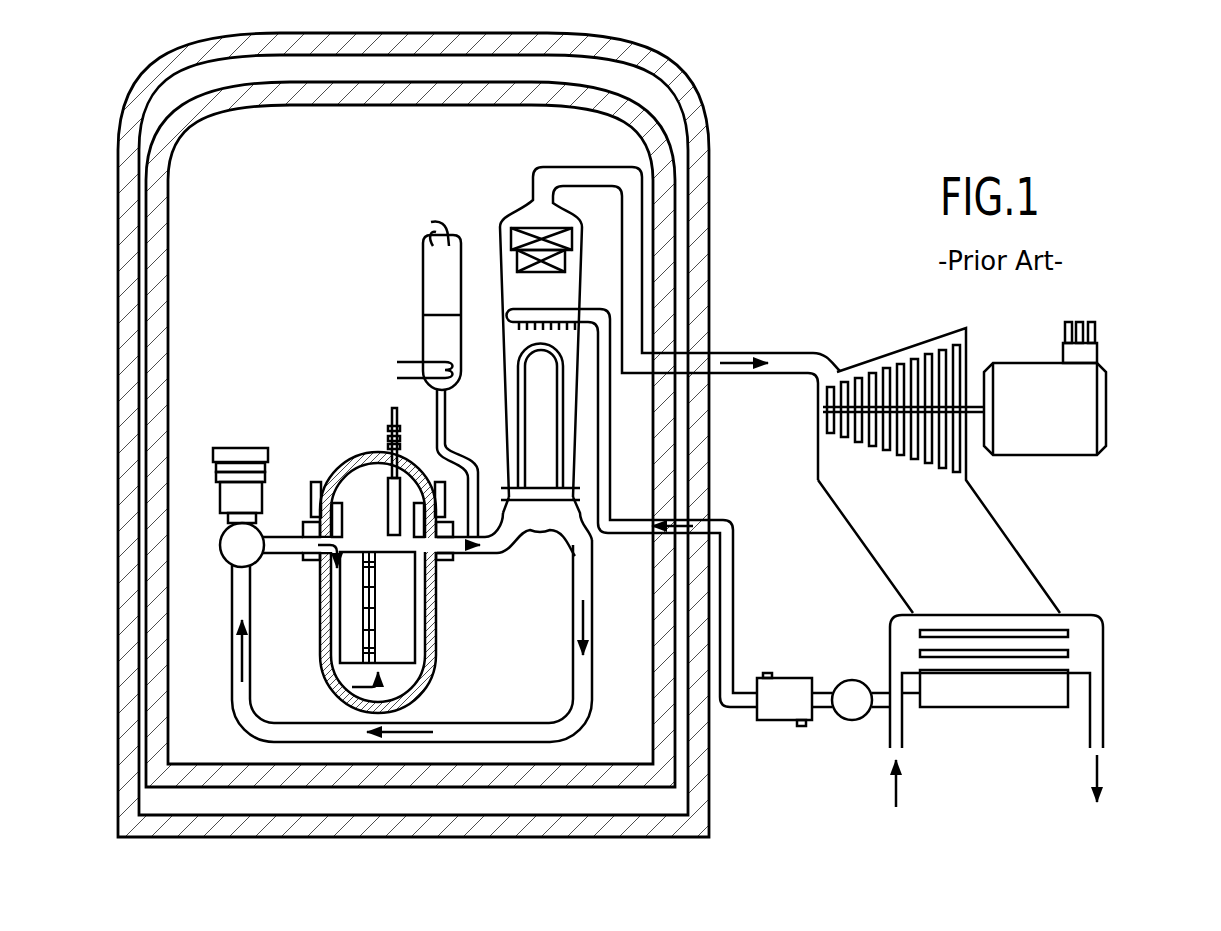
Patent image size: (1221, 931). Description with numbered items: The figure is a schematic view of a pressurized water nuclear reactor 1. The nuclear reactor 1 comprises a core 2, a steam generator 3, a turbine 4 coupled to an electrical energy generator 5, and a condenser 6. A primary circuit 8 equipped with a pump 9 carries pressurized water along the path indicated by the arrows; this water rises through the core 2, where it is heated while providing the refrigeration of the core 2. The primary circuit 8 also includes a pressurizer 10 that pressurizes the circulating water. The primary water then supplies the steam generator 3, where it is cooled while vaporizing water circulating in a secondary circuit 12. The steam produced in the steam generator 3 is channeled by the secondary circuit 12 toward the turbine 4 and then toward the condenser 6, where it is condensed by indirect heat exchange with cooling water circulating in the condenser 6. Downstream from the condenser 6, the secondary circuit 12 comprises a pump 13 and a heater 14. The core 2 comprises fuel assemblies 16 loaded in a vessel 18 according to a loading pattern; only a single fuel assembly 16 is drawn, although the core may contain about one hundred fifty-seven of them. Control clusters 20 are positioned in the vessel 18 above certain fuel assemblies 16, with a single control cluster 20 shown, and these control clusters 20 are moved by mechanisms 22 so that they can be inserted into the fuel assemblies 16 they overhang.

The nuclear reactor 1 is at (740, 140).
The core 2 is at (434, 587).
The steam generator 3 is at (512, 193).
The turbine 4 is at (930, 330).
The electrical energy generator 5 is at (1123, 415).
The condenser 6 is at (1035, 553).
The primary circuit 8 is at (228, 668).
The pump 9 is at (208, 446).
The pressurizer 10 is at (418, 285).
The secondary circuit 12 is at (770, 347).
The pump 13 is at (852, 723).
The heater 14 is at (792, 673).
The fuel assemblies 16 is at (361, 615).
The vessel 18 is at (447, 667).
The control clusters 20 is at (403, 493).
The mechanisms 22 is at (386, 436).